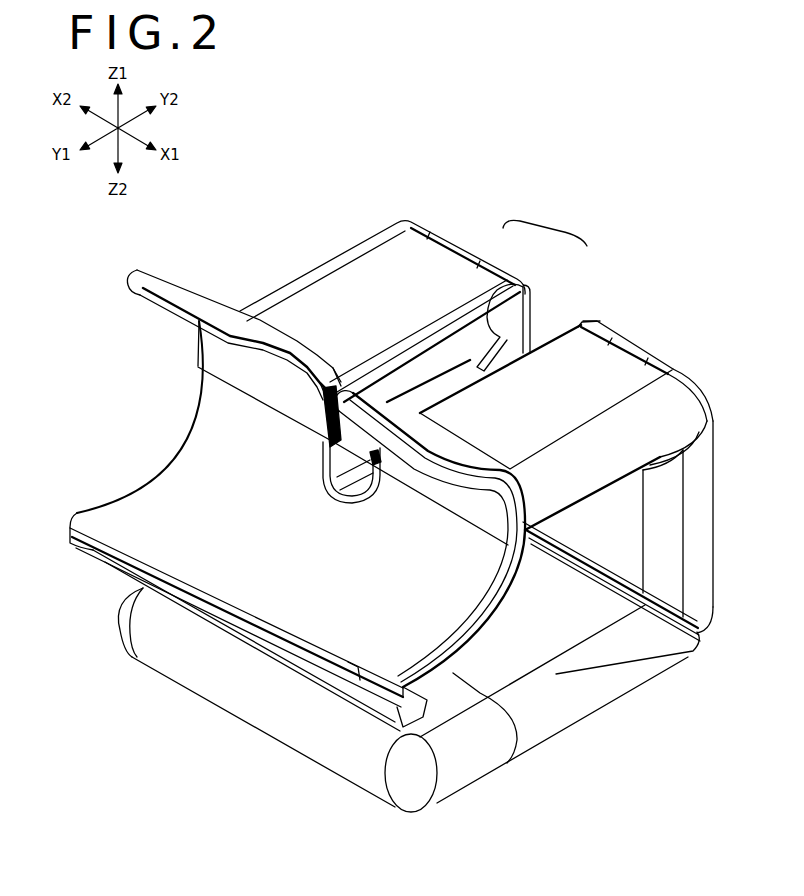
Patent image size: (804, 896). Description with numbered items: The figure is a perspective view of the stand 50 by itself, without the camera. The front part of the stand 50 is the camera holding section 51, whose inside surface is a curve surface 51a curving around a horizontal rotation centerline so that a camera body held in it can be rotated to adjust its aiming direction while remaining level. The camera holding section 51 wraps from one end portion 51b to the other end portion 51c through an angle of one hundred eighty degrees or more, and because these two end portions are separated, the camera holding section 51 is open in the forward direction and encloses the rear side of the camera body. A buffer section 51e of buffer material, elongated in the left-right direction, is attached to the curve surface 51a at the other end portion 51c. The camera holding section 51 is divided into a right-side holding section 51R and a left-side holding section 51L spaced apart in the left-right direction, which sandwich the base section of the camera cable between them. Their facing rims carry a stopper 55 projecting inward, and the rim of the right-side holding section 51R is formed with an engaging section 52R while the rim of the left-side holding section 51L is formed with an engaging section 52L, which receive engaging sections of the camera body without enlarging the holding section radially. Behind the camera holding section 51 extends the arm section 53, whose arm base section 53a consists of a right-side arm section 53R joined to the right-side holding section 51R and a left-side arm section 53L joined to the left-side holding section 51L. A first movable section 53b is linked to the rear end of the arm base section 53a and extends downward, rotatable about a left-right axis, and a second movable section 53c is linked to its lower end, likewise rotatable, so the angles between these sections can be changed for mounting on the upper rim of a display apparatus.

The stand 50 is at (440, 212).
The camera holding section 51 is at (395, 312).
The left-side holding section 51L is at (263, 328).
The right-side holding section 51R is at (381, 398).
The curve surface 51a is at (184, 472).
The one end portion 51b is at (170, 306).
The other end portion 51c is at (103, 533).
The buffer section 51e is at (130, 547).
The engaging section 52L is at (323, 436).
The engaging section 52R is at (377, 448).
The arm section 53 is at (651, 348).
The left-side arm section 53L is at (481, 281).
The right-side arm section 53R is at (578, 324).
The arm base section 53a is at (545, 224).
The first movable section 53b is at (702, 501).
The second movable section 53c is at (587, 667).
The stopper 55 is at (320, 374).